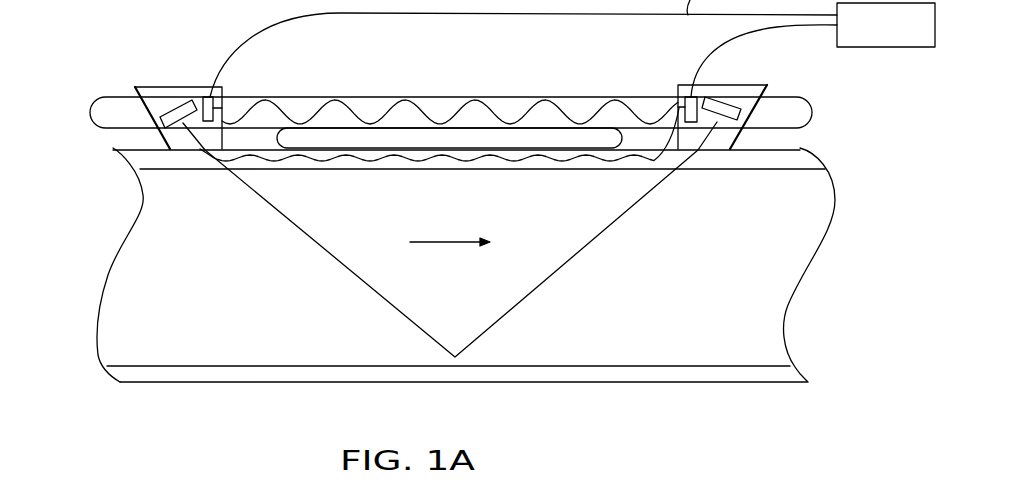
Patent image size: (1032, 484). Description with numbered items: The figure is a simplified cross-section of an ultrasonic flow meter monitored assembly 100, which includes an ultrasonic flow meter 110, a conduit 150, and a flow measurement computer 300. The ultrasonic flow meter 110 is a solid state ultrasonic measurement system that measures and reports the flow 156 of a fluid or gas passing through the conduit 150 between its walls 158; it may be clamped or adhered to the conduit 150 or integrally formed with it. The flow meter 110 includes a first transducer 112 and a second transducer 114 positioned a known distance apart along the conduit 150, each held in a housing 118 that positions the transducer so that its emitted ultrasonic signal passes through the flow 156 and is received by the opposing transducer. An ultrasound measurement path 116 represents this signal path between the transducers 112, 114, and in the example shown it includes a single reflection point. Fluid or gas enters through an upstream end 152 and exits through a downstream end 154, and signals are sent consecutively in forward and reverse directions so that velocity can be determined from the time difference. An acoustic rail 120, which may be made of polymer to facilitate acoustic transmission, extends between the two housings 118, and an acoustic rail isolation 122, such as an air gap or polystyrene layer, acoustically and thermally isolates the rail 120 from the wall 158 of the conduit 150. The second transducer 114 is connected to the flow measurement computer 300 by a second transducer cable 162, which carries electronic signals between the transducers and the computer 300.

The ultrasonic flow meter monitored assembly 100 is at (72, 25).
The ultrasonic flow meter 110 is at (824, 104).
The first transducer 112 is at (162, 114).
The second transducer 114 is at (750, 96).
The ultrasound measurement path 116 is at (253, 196).
The housing 118 is at (159, 87).
The acoustic rail 120 is at (396, 99).
The acoustic rail isolation 122 is at (518, 140).
The conduit 150 is at (788, 381).
The upstream end 152 is at (91, 298).
The downstream end 154 is at (800, 311).
The flow 156 is at (472, 229).
The wall 158 is at (822, 155).
The second transducer cable 162 is at (705, 56).
The flow measurement computer 300 is at (908, 35).